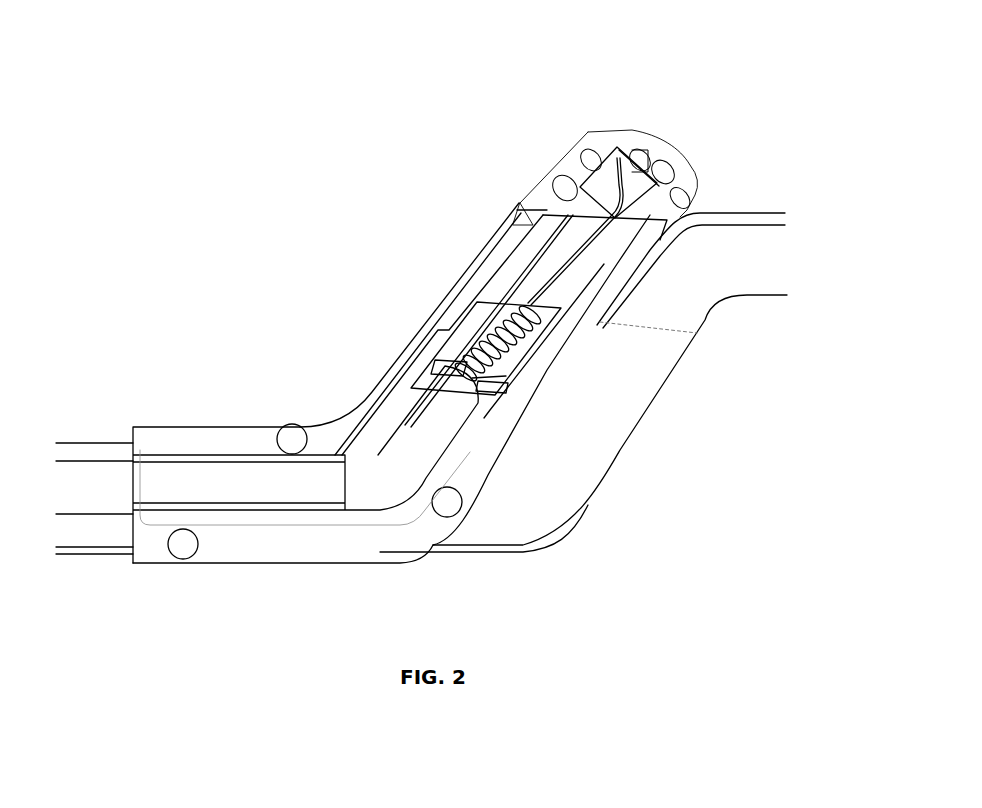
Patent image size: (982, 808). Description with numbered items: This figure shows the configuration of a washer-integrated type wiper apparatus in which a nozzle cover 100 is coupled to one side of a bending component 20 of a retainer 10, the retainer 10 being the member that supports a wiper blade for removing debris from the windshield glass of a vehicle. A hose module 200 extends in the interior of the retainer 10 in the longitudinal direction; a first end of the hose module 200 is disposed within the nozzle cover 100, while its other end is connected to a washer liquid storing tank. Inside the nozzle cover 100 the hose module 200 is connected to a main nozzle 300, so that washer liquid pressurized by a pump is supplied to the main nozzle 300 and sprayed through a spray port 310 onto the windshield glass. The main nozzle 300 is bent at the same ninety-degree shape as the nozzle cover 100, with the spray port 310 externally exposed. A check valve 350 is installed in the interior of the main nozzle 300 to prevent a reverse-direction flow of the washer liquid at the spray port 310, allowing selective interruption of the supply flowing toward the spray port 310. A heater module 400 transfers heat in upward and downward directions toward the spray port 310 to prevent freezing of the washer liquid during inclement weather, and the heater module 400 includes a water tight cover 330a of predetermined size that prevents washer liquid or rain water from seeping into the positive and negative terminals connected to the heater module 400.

The retainer 10 is at (83, 536).
The bending component 20 is at (690, 320).
The nozzle cover 100 is at (420, 357).
The hose module 200 is at (393, 490).
The main nozzle 300 is at (655, 143).
The spray port 310 is at (663, 175).
The water tight cover 330a is at (540, 323).
The check valve 350 is at (507, 370).
The heater module 400 is at (600, 178).